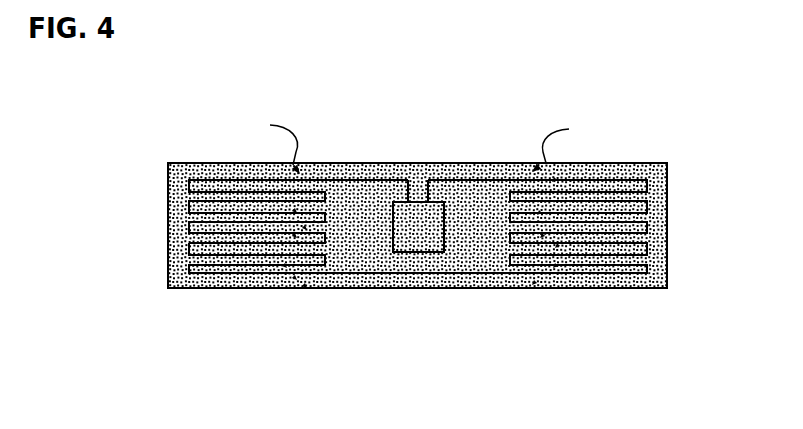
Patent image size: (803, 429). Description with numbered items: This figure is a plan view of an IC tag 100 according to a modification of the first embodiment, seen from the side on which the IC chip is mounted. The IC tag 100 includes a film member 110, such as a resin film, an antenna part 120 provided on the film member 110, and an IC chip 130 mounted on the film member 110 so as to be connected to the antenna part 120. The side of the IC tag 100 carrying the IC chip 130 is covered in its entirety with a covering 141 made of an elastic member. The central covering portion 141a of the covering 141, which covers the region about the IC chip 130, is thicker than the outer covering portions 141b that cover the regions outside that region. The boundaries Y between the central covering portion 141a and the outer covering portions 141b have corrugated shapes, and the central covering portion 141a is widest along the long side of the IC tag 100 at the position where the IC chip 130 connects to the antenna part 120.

The IC tag 100 is at (428, 200).
The film member 110 is at (625, 163).
The antenna part 120 is at (595, 270).
The IC chip 130 is at (422, 212).
The covering 141 is at (285, 227).
The central covering portion 141a is at (417, 262).
The outer covering portions 141b is at (237, 247).